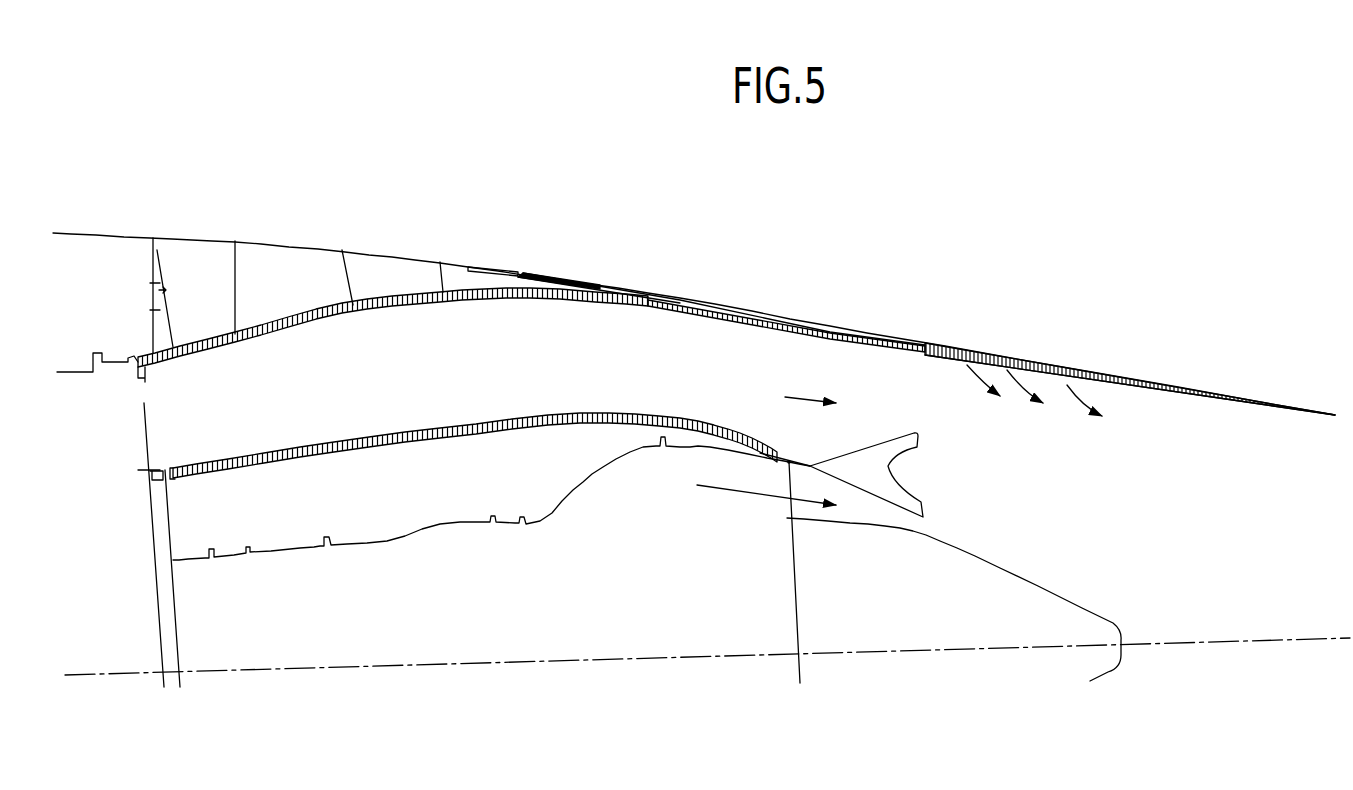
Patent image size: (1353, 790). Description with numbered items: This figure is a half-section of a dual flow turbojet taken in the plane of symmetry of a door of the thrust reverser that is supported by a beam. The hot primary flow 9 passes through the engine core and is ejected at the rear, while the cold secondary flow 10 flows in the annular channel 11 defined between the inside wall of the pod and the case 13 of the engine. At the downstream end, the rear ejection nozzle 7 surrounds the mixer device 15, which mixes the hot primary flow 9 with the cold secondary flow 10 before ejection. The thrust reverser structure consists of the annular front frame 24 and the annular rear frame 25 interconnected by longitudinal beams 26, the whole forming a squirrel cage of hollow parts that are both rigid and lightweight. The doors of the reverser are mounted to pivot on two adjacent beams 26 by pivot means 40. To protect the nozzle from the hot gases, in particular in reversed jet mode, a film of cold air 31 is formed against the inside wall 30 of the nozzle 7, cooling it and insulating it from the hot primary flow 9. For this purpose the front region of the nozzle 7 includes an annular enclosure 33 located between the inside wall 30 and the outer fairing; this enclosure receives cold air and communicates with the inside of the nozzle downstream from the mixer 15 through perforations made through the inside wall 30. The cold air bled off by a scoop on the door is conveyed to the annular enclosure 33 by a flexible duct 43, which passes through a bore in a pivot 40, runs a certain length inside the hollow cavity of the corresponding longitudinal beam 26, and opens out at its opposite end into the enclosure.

The rear ejection nozzle 7 is at (1185, 382).
The hot primary flow 9 is at (735, 493).
The cold secondary flow 10 is at (805, 393).
The annular channel 11 is at (482, 383).
The engine case 13 is at (670, 413).
The mixer device 15 is at (882, 477).
The annular front frame 24 is at (208, 272).
The annular rear frame 25 is at (540, 275).
The longitudinal beam 26 is at (358, 303).
The inside wall of the nozzle 30 is at (1133, 388).
The film of cold air 31 is at (977, 385).
The annular enclosure 33 is at (798, 320).
The pivot means 40 is at (465, 267).
The flexible duct 43 is at (505, 265).